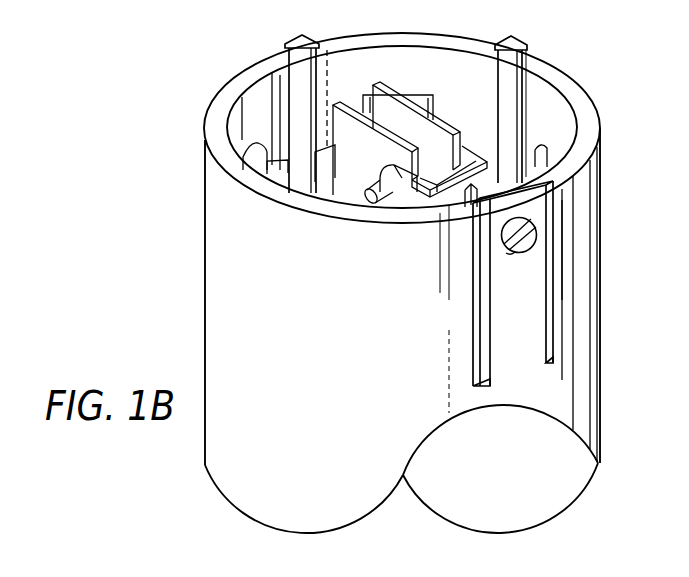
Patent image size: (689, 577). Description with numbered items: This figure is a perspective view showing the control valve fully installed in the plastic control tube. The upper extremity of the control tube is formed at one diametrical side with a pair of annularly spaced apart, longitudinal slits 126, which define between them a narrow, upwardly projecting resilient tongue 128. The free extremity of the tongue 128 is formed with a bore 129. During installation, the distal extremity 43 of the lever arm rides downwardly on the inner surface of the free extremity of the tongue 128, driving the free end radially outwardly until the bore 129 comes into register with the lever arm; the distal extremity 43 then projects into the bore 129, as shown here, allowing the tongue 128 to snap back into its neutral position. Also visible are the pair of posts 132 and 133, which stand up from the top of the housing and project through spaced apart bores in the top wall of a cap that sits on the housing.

The post 132 is at (302, 80).
The post 133 is at (513, 97).
The longitudinal slit 126 is at (553, 213).
The resilient tongue 128 is at (545, 268).
The distal extremity of lever arm 43 is at (536, 246).
The bore 129 is at (511, 254).